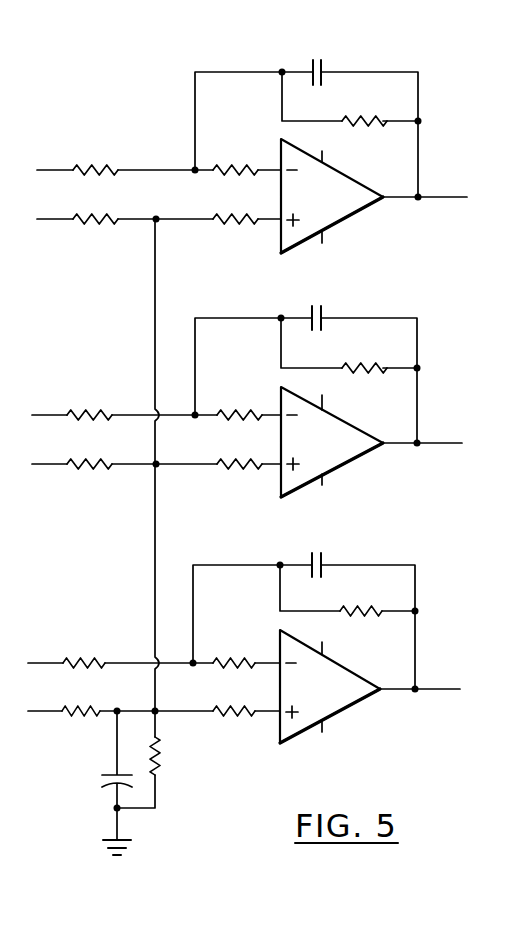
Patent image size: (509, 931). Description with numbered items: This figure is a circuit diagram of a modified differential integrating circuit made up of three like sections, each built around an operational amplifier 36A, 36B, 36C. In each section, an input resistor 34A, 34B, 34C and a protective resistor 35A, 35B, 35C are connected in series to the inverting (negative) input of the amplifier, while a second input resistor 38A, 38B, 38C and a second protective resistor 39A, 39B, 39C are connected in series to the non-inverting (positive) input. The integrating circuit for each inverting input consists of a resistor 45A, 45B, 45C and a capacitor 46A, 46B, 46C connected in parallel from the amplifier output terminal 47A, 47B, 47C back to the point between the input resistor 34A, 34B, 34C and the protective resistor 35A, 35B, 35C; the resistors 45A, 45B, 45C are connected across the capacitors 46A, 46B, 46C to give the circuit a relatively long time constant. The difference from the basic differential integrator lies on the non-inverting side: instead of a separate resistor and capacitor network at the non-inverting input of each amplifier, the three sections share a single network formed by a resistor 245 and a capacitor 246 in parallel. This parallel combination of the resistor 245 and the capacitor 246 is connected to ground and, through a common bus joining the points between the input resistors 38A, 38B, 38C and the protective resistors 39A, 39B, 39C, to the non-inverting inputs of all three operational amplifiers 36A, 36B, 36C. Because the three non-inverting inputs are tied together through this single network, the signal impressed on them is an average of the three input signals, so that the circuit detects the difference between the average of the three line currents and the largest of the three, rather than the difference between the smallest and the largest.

The input resistor 34A is at (98, 168).
The protective resistor 35A is at (229, 168).
The input resistor 38A is at (92, 223).
The protective resistor 39A is at (217, 223).
The resistor 45A is at (361, 118).
The capacitor 46A is at (325, 72).
The operational amplifier 36A is at (343, 180).
The amplifier output terminal 47A is at (419, 196).
The input resistor 34B is at (99, 412).
The protective resistor 35B is at (240, 412).
The input resistor 38B is at (97, 468).
The protective resistor 39B is at (232, 468).
The resistor 45B is at (361, 365).
The capacitor 46B is at (325, 318).
The operational amplifier 36B is at (343, 427).
The amplifier output terminal 47B is at (418, 443).
The input resistor 34C is at (83, 661).
The protective resistor 35C is at (228, 661).
The input resistor 38C is at (74, 716).
The protective resistor 39C is at (221, 718).
The resistor 45C is at (361, 608).
The capacitor 46C is at (325, 565).
The operational amplifier 36C is at (343, 670).
The amplifier output terminal 47C is at (416, 611).
The resistor 245 is at (160, 757).
The capacitor 246 is at (100, 781).